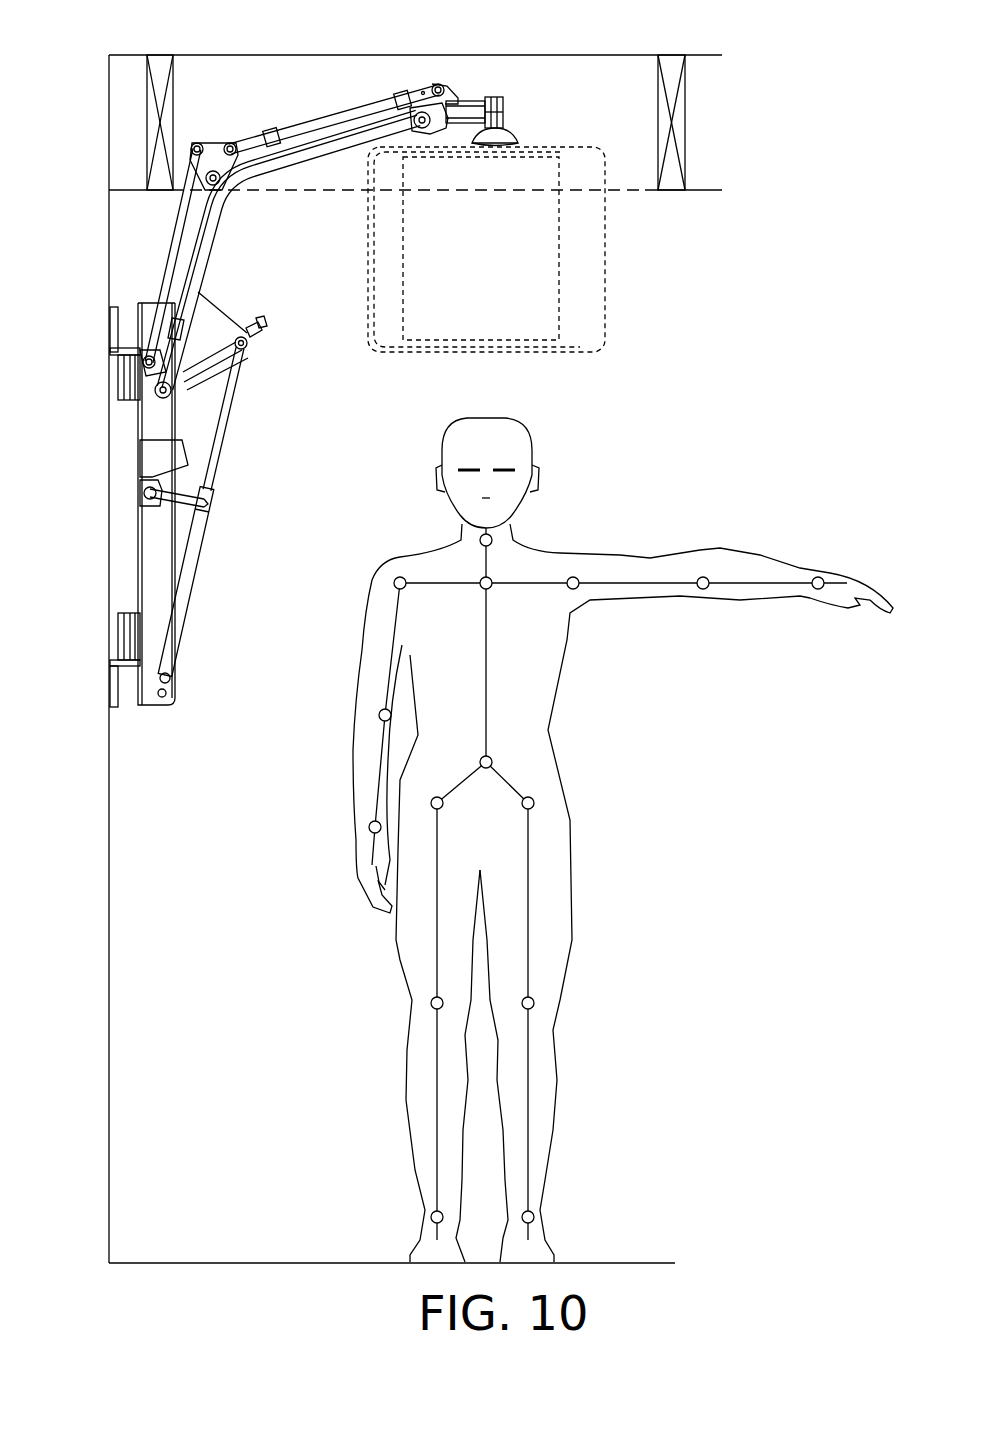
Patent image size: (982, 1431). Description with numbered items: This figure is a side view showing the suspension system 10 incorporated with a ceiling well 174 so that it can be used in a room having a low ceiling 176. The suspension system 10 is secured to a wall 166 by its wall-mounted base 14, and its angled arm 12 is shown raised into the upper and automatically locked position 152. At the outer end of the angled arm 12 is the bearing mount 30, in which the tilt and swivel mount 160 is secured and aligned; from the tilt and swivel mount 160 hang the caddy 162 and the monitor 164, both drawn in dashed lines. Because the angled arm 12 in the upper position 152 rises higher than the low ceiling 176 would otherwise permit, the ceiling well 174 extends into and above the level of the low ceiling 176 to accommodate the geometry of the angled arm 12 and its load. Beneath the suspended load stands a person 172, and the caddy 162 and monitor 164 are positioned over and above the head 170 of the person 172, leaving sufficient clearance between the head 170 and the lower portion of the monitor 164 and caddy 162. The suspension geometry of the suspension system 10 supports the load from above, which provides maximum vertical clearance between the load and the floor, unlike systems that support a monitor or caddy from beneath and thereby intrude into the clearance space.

The suspension system 10 is at (92, 108).
The angled arm 12 is at (272, 199).
The base mount 14 is at (133, 525).
The bearing mount 30 is at (506, 104).
The upper and automatically locked position 152 is at (462, 113).
The tilt and swivel mount 160 is at (508, 140).
The caddy 162 is at (580, 147).
The monitor 164 is at (605, 228).
The wall 166 is at (109, 875).
The head 170 is at (567, 452).
The person 172 is at (617, 837).
The ceiling well 174 is at (320, 72).
The low ceiling 176 is at (695, 190).